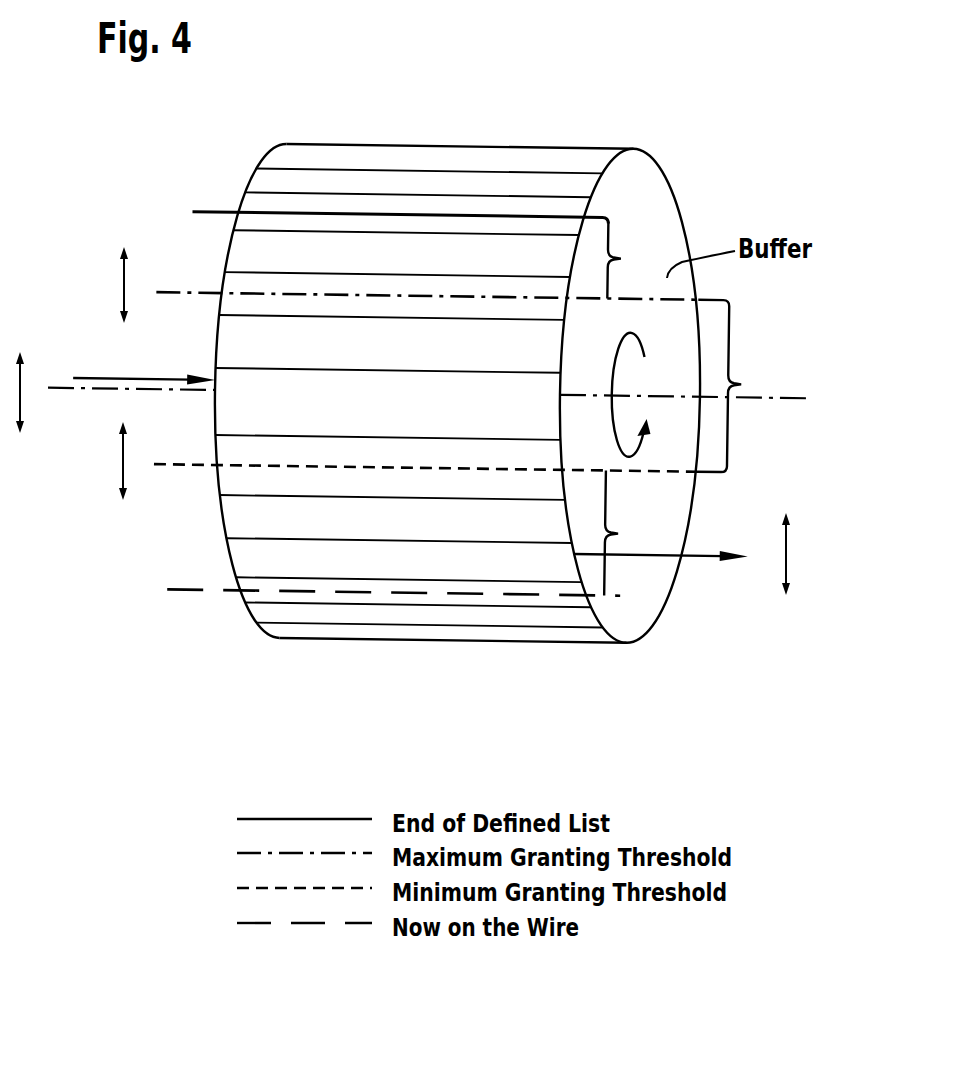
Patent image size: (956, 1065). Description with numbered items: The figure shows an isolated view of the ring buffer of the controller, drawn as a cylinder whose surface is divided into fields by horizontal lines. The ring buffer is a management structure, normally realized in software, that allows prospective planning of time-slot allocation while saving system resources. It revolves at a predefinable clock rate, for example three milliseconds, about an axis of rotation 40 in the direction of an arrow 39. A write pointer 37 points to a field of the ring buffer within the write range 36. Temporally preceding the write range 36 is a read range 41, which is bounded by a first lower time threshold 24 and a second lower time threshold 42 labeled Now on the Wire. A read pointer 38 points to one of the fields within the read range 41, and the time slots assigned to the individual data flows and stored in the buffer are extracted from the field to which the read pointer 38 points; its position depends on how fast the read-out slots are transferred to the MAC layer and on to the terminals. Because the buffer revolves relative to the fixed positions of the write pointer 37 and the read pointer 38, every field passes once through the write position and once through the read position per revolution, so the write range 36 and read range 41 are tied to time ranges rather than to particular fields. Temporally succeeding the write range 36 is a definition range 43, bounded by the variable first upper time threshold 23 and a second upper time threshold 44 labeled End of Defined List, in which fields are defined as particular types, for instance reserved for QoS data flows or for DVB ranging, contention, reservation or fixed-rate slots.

The first upper time threshold 23 is at (188, 292).
The first lower time threshold 24 is at (182, 466).
The write range 36 is at (733, 386).
The write pointer 37 is at (93, 378).
The read pointer 38 is at (712, 560).
The arrow 39 is at (613, 366).
The axis of rotation 40 is at (797, 395).
The read range 41 is at (624, 532).
The second lower time threshold (Now on the Wire) 42 is at (440, 596).
The definition range 43 is at (628, 259).
The second upper time threshold (End of Defined List) 44 is at (441, 212).